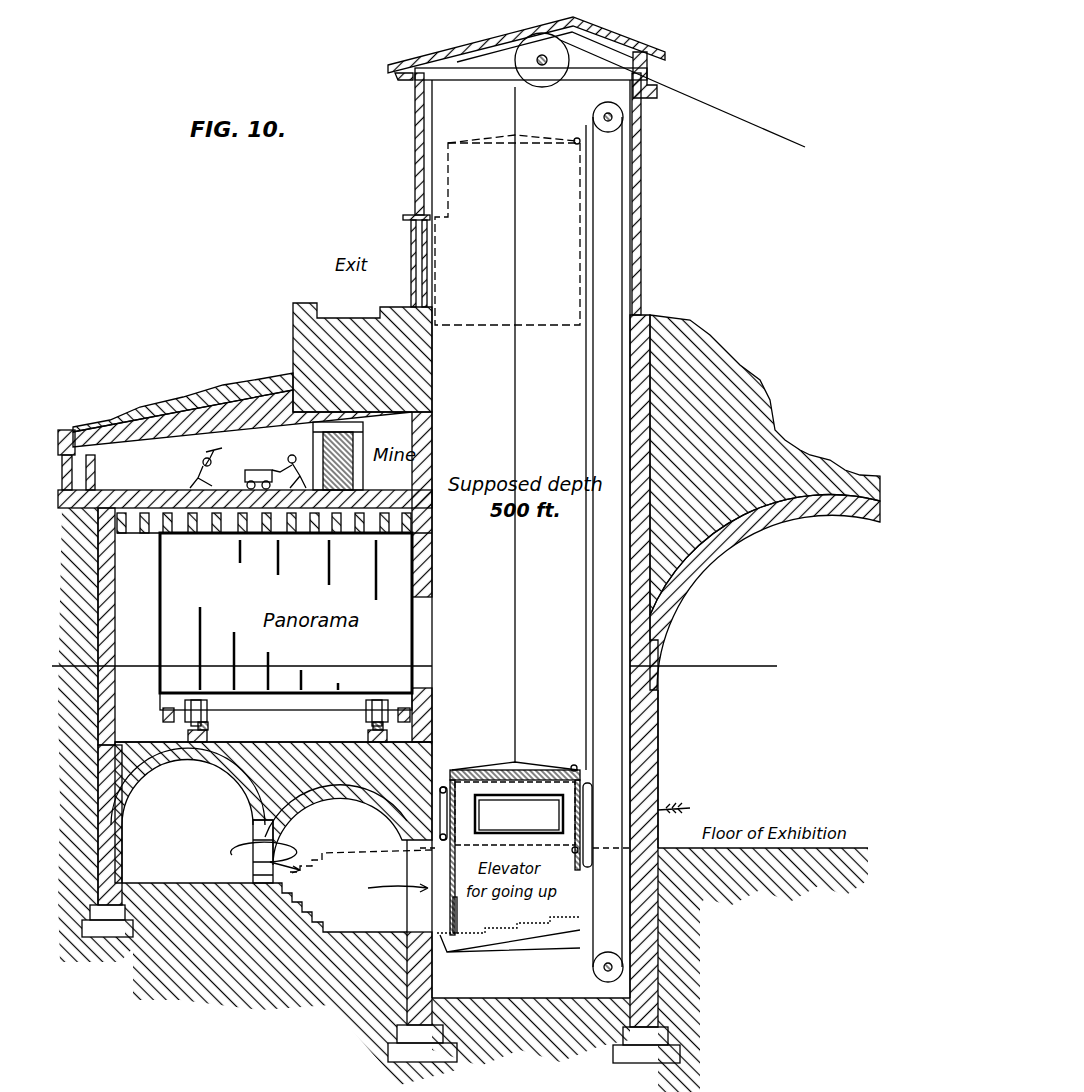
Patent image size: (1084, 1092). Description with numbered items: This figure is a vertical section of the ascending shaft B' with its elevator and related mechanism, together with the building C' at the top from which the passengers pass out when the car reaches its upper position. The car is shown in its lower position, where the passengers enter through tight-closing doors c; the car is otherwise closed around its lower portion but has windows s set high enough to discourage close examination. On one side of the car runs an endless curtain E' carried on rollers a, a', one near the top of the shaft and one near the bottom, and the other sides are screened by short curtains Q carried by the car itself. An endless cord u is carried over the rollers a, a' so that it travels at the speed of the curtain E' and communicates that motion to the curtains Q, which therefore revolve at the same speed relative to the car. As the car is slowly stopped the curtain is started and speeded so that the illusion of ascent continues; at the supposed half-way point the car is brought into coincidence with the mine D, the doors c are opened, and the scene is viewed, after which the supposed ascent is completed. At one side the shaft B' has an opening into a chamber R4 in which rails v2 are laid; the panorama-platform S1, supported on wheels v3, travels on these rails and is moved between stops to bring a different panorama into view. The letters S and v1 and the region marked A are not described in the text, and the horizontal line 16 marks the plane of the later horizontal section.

The roller a is at (608, 107).
The roller a' is at (608, 956).
The exhibition building masonry A is at (746, 703).
The ascending shaft B' is at (531, 515).
The building C' is at (596, 166).
The mine D is at (248, 465).
The endless curtain E' is at (607, 542).
The endless cord u is at (584, 595).
The curtain Q is at (437, 812).
The chamber R4 is at (245, 735).
The panorama-platform S1 is at (286, 691).
The cage window frame S is at (519, 814).
The window s is at (601, 815).
The door c is at (448, 878).
The roller block v1 is at (387, 733).
The rail v2 is at (207, 731).
The wheel v3 is at (372, 719).
The section line 16 is at (414, 657).